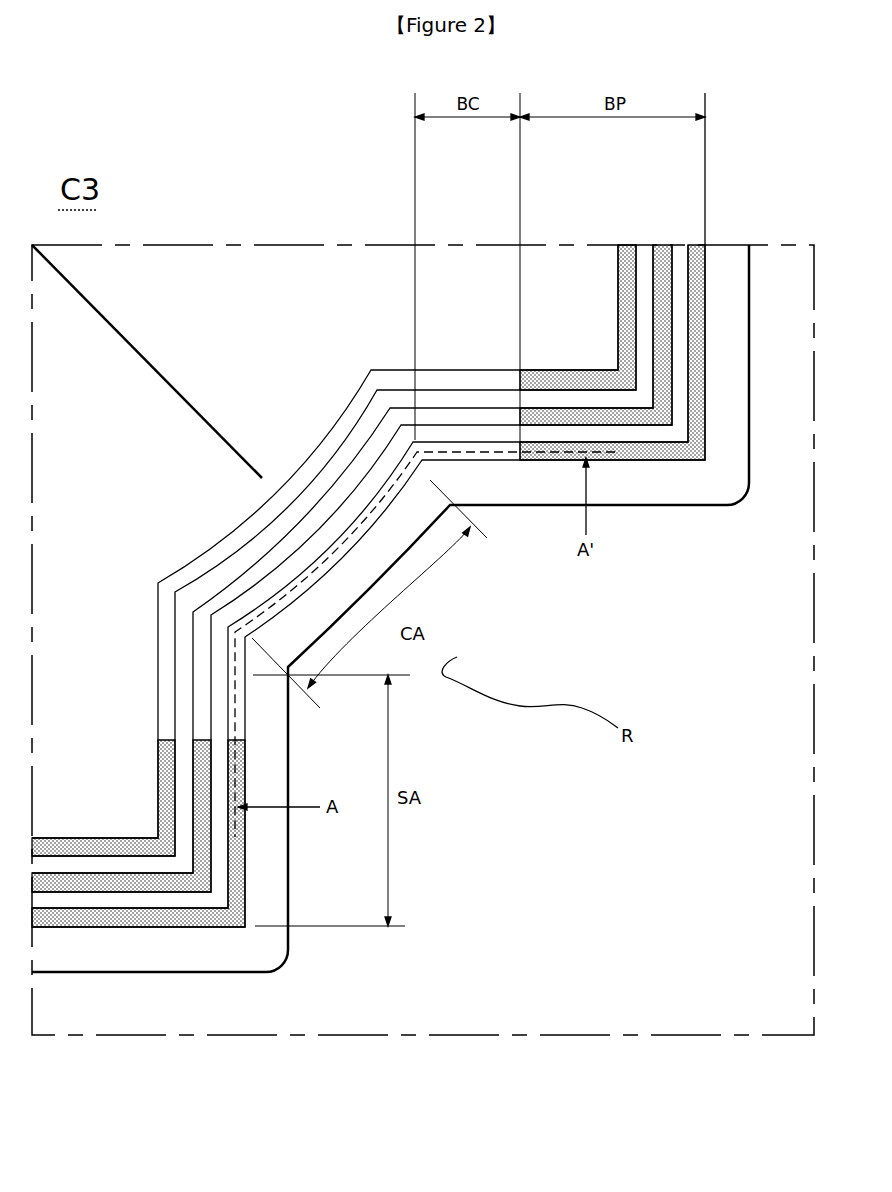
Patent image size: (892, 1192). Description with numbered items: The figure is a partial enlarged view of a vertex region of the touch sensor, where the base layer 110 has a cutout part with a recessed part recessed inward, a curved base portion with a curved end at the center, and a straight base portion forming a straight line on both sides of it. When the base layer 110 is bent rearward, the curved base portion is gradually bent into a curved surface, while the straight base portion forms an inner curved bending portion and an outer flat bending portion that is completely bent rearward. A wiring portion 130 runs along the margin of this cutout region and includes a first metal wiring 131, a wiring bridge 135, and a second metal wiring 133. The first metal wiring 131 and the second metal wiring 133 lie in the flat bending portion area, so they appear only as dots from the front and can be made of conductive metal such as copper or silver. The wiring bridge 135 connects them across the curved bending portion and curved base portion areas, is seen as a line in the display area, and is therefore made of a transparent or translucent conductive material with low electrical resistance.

The base layer 110 is at (152, 953).
The wiring portion 130 is at (345, 162).
The first metal wiring 131 is at (618, 310).
The second metal wiring 133 is at (95, 837).
The wiring bridge 135 is at (322, 418).